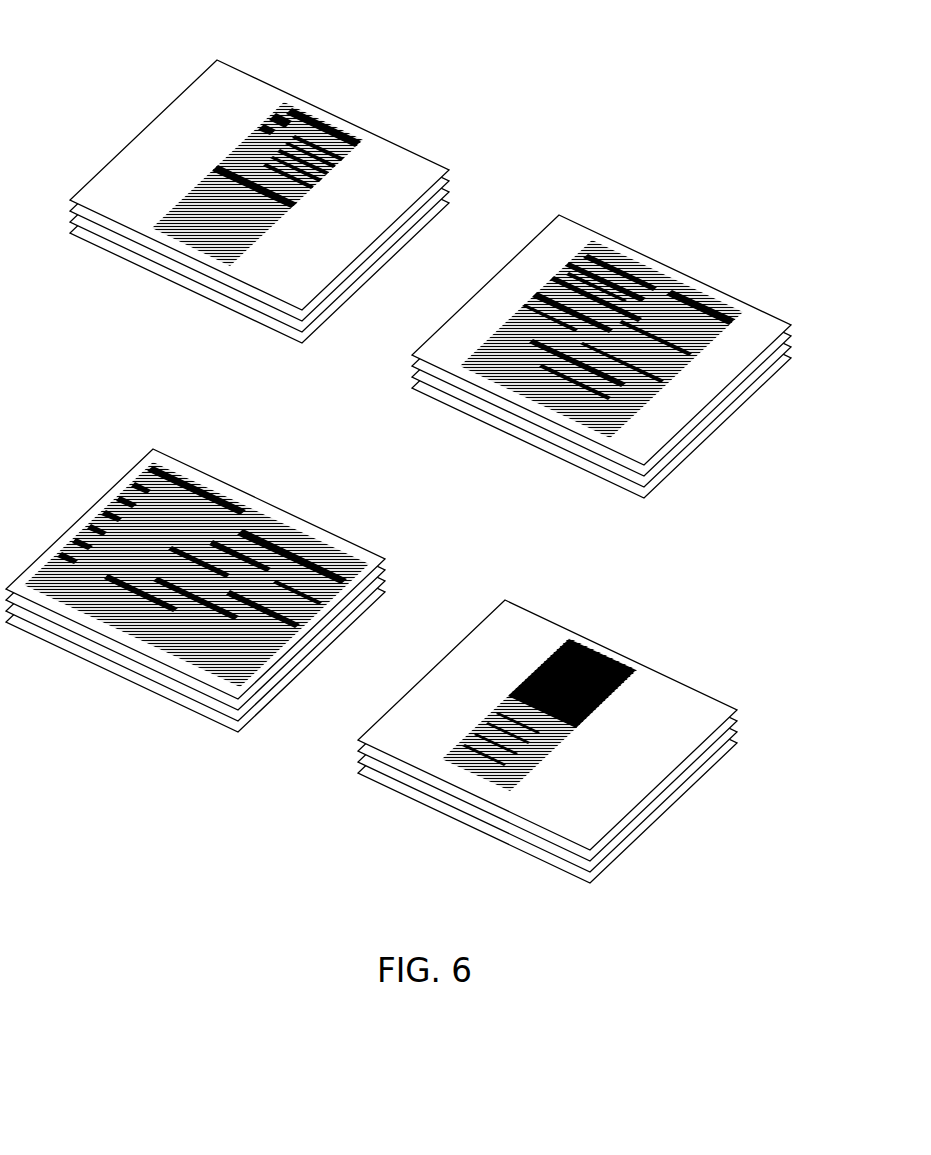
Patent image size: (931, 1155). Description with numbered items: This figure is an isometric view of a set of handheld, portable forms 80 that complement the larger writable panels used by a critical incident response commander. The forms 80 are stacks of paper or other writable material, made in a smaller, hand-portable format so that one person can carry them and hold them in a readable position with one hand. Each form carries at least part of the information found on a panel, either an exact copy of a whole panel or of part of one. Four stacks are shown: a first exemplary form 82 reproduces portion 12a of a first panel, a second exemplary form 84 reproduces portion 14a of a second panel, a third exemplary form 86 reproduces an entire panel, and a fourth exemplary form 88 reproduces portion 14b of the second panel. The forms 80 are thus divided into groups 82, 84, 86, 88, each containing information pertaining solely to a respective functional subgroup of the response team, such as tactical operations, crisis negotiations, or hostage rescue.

The matching forms 80 is at (553, 93).
The first exemplary form 82 is at (259, 183).
The portion of panel 12a is at (323, 120).
The second exemplary form 84 is at (621, 355).
The portion of panel 14a is at (663, 265).
The third exemplary form 86 is at (195, 468).
The fourth exemplary form 88 is at (547, 728).
The portion of panel 14b is at (612, 657).